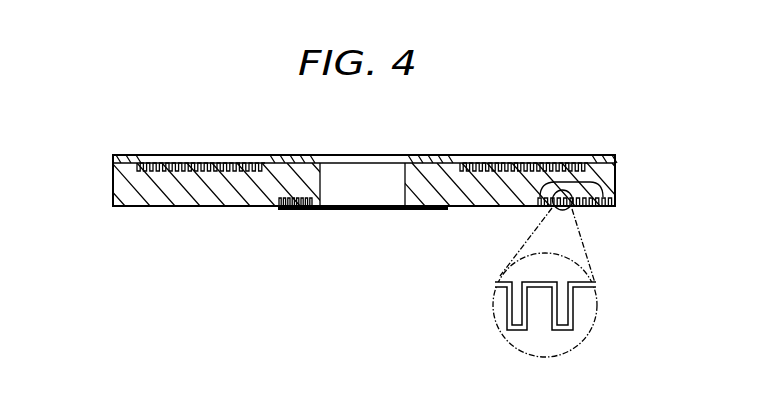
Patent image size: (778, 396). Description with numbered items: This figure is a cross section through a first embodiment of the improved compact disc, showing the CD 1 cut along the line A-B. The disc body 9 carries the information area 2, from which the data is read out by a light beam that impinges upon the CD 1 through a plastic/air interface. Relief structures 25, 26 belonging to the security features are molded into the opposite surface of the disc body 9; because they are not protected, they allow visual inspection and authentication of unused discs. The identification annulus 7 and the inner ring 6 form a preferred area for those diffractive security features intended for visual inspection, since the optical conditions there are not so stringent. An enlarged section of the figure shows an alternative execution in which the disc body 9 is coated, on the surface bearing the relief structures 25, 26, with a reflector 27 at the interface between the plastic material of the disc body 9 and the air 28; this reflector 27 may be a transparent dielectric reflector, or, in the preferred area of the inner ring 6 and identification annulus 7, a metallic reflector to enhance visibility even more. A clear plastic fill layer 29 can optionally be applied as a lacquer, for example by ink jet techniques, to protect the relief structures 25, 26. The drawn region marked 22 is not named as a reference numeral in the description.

The compact disc 1 is at (113, 192).
The information area 2 is at (137, 151).
The inner ring 6 is at (410, 155).
The identification annulus 7 is at (415, 151).
The disc body 9 is at (473, 200).
The bottom electrode structure 22 is at (604, 207).
The relief structure 25 is at (567, 182).
The relief structure 26 is at (280, 221).
The reflector 27 is at (498, 316).
The air 28 is at (568, 338).
The clear plastic fill layer 29 is at (322, 209).